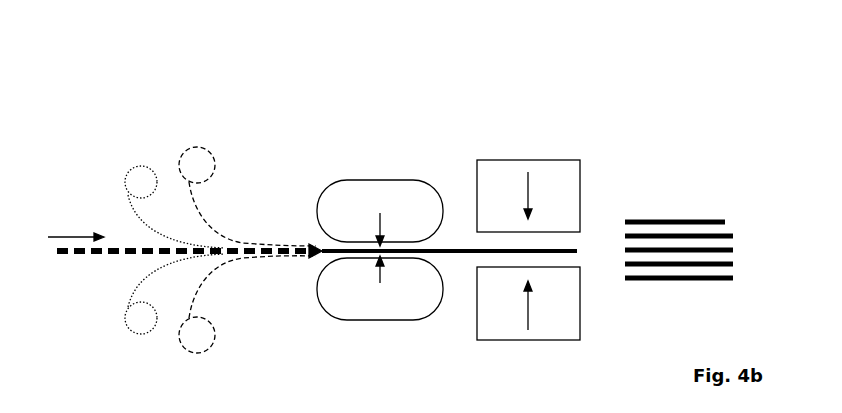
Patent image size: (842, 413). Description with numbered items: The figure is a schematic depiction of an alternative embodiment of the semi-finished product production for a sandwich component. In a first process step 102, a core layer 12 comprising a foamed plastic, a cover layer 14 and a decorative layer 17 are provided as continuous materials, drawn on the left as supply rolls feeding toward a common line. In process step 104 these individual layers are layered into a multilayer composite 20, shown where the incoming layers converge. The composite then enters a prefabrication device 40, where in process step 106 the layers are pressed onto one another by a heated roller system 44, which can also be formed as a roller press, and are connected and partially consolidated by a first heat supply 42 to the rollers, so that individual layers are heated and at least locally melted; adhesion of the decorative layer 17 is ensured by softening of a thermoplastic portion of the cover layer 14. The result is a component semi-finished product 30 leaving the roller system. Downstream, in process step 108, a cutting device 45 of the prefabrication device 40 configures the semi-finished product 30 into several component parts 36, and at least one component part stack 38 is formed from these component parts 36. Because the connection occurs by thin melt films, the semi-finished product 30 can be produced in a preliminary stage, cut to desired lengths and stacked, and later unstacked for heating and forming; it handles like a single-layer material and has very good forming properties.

The core layer 12 is at (87, 244).
The cover layer 14 is at (130, 203).
The decorative layer 17 is at (194, 214).
The multilayer composite 20 is at (269, 275).
The component semi-finished product 30 is at (577, 249).
The component parts 36 is at (730, 222).
The component part stack 38 is at (696, 212).
The prefabrication device 40 is at (388, 192).
The heat supply 42 is at (382, 226).
The heated roller system 44 is at (411, 180).
The cutting device 45 is at (547, 142).
The process step 102 is at (121, 132).
The process step 104 is at (284, 205).
The process step 106 is at (366, 154).
The process step 108 is at (661, 168).